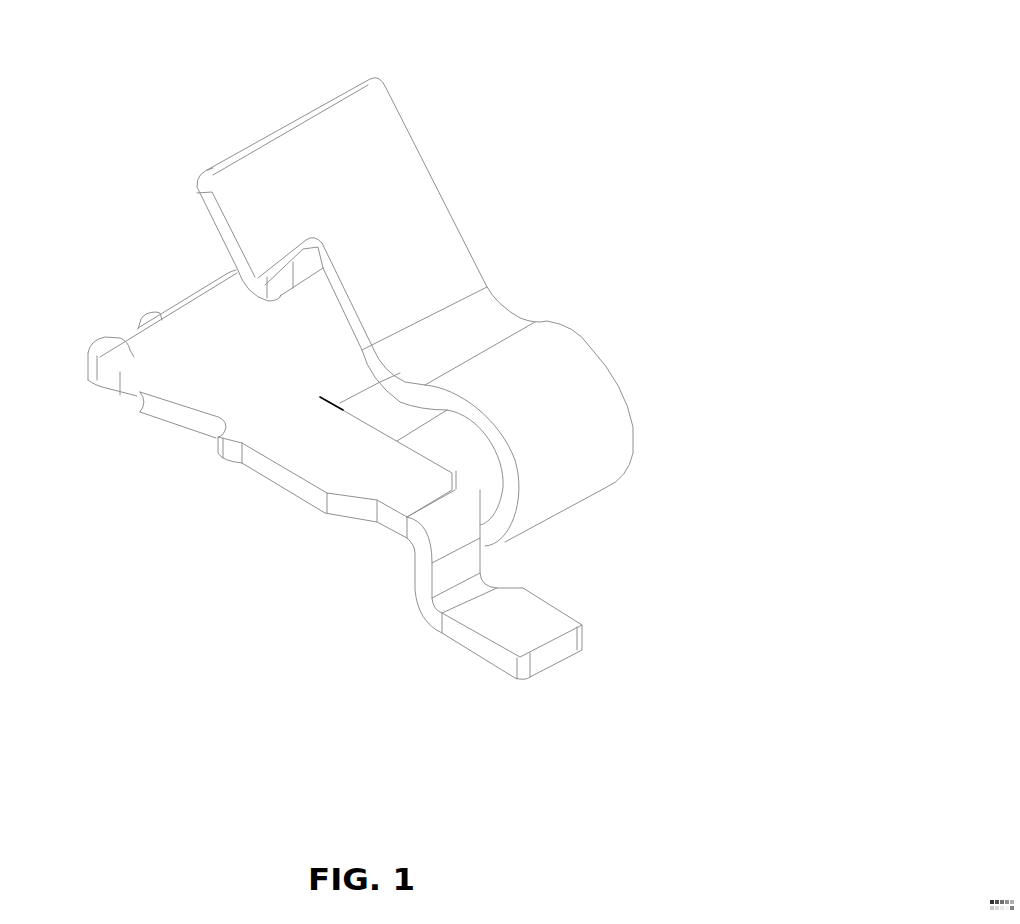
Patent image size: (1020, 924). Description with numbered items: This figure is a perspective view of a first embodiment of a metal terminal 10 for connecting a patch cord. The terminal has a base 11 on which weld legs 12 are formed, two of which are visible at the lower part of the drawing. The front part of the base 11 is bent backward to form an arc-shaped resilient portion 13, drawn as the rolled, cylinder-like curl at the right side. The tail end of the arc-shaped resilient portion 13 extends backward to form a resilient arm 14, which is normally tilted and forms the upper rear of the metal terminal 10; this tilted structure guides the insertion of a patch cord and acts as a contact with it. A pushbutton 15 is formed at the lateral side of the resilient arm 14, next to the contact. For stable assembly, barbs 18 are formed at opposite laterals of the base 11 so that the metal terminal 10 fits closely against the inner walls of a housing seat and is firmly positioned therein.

The metal terminal 10 is at (598, 94).
The base 11 is at (267, 382).
The weld legs 12 is at (100, 355).
The arc-shaped resilient portion 13 is at (573, 470).
The resilient arm 14 is at (393, 205).
The pushbutton 15 is at (283, 262).
The barbs 18 is at (280, 488).